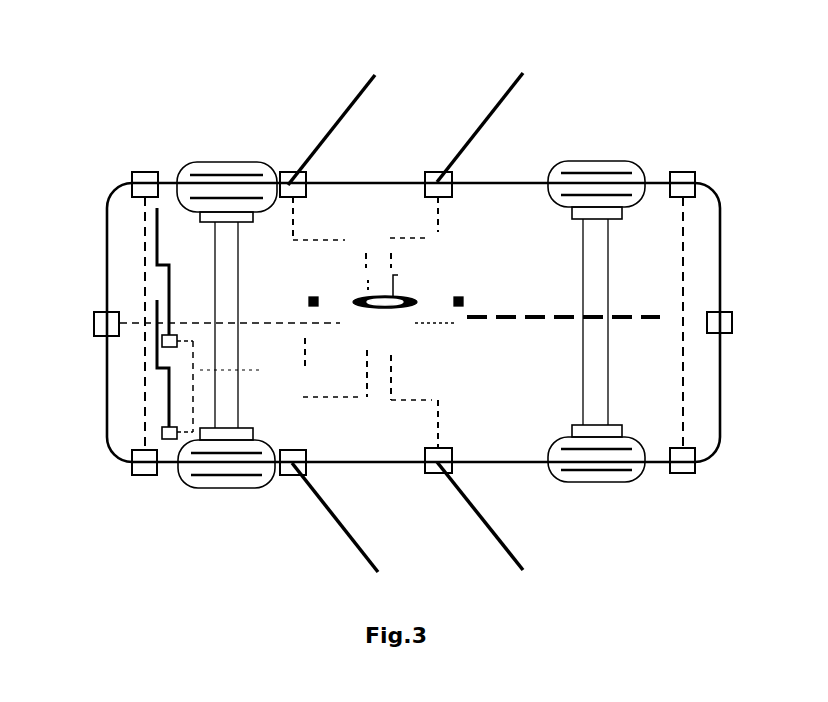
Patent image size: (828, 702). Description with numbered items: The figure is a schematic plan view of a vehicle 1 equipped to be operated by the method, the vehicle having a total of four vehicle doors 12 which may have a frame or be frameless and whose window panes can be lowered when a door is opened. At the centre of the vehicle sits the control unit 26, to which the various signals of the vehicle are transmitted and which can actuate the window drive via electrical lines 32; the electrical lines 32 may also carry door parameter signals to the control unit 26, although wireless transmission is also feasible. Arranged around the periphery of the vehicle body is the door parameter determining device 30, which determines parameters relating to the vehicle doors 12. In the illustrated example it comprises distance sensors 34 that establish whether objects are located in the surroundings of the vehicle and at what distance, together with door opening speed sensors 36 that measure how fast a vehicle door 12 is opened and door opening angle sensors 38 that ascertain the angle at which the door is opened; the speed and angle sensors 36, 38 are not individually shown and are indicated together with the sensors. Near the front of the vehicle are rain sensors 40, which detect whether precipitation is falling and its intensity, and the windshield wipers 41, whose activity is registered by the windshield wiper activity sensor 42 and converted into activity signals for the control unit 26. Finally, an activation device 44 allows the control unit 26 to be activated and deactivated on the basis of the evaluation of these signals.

The vehicle 1 is at (413, 324).
The vehicle door 12 is at (362, 80).
The control unit 26 is at (385, 317).
The door parameter determining device 30 is at (418, 336).
The electrical lines 32 is at (517, 387).
The distance sensors 34 is at (143, 172).
The door opening speed sensors 36 is at (339, 326).
The door opening angle sensors 38 is at (290, 172).
The rain sensors 40 is at (292, 277).
The windshield wipers 41 is at (155, 243).
The windshield wiper activity sensor 42 is at (170, 350).
The activation device 44 is at (443, 278).